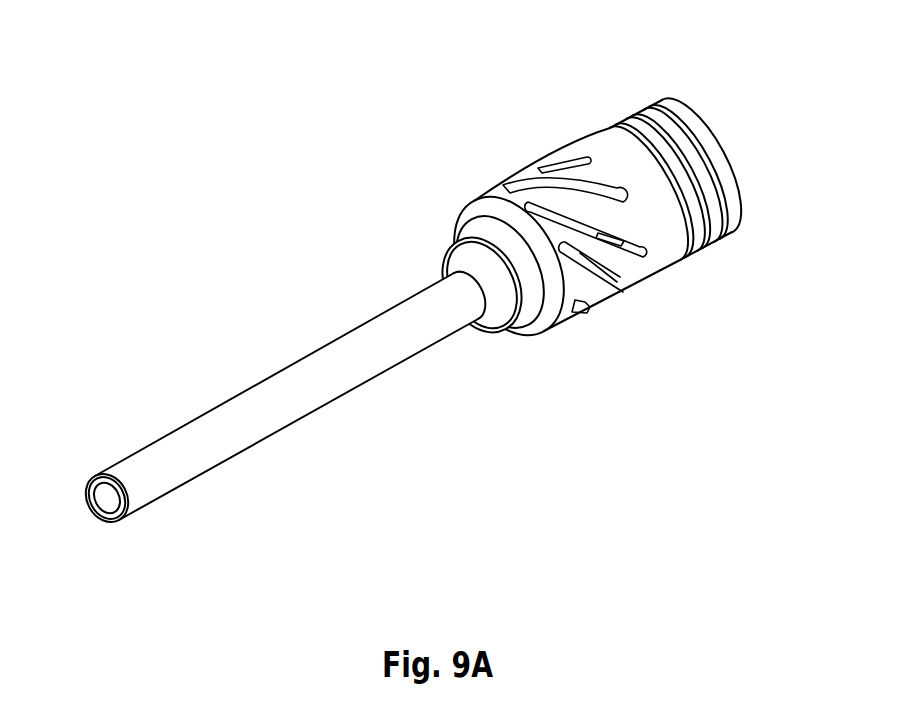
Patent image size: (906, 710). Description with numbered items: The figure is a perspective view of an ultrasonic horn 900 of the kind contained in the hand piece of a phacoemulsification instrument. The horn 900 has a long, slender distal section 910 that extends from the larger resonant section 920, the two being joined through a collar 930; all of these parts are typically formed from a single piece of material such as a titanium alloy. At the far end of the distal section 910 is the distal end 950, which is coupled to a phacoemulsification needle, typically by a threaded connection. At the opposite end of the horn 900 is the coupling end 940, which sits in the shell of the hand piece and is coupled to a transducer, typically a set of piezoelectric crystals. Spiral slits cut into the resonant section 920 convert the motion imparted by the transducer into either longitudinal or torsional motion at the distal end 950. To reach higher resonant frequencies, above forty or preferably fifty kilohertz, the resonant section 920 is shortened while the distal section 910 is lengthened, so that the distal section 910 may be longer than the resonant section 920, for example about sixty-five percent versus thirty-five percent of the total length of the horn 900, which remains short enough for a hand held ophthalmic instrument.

The horn 900 is at (417, 322).
The distal section 910 is at (278, 358).
The resonant section 920 is at (504, 163).
The collar 930 is at (492, 318).
The coupling end 940 is at (727, 110).
The distal end 950 is at (91, 533).